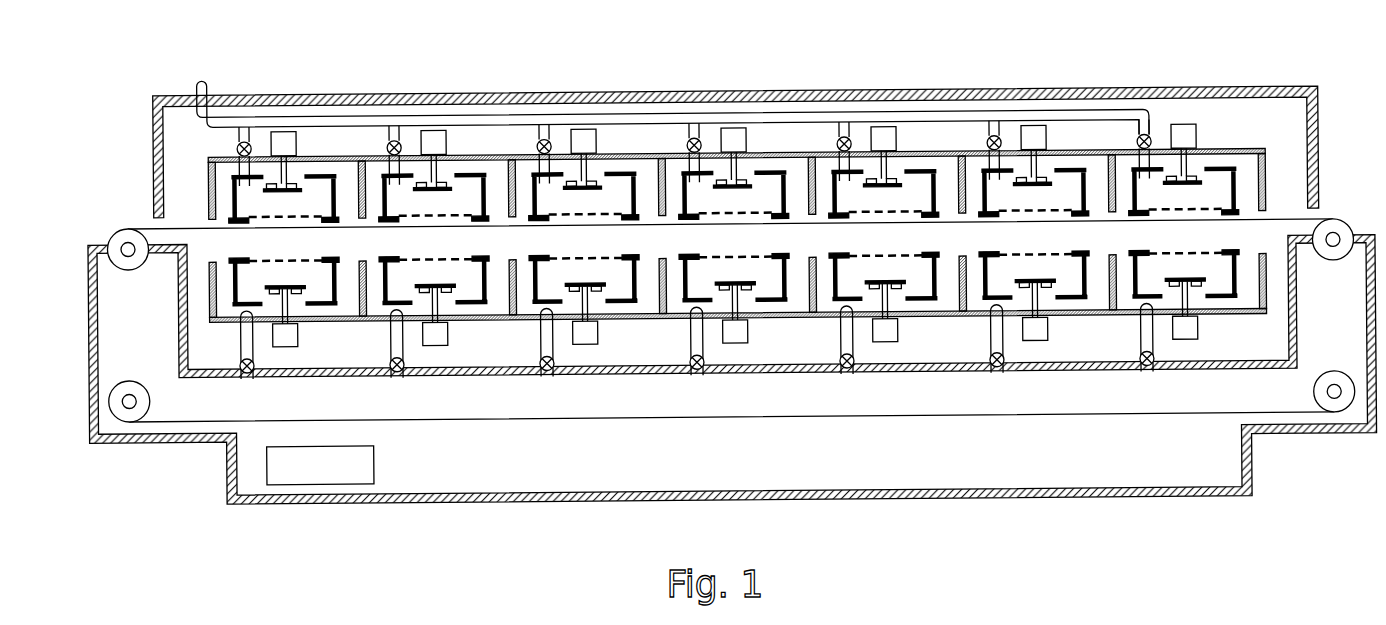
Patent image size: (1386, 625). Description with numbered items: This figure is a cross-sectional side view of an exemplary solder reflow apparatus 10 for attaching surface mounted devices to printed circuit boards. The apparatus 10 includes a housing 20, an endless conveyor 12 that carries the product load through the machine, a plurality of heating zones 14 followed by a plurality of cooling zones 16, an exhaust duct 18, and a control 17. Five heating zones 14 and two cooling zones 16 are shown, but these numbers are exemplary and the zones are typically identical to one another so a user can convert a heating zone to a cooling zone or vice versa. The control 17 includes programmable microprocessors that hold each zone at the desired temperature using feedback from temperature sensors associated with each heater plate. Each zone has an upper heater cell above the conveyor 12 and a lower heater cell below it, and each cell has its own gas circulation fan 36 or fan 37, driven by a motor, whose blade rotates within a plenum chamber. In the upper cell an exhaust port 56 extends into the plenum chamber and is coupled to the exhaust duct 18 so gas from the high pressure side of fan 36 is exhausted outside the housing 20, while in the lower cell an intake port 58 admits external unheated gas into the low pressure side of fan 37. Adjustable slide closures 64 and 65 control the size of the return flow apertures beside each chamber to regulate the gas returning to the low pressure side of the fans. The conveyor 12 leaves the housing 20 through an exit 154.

The apparatus 10 is at (765, 85).
The endless conveyor 12 is at (113, 227).
The heating zones 14 is at (425, 107).
The cooling zones 16 is at (1192, 118).
The control 17 is at (373, 463).
The exhaust duct 18 is at (203, 87).
The housing 20 is at (80, 276).
The fan 36 is at (734, 172).
The fan 37 is at (735, 298).
The exhaust port 56 is at (700, 166).
The intake port 58 is at (674, 341).
The closure 64 is at (241, 225).
The closure 65 is at (244, 259).
The exit 154 is at (1318, 225).